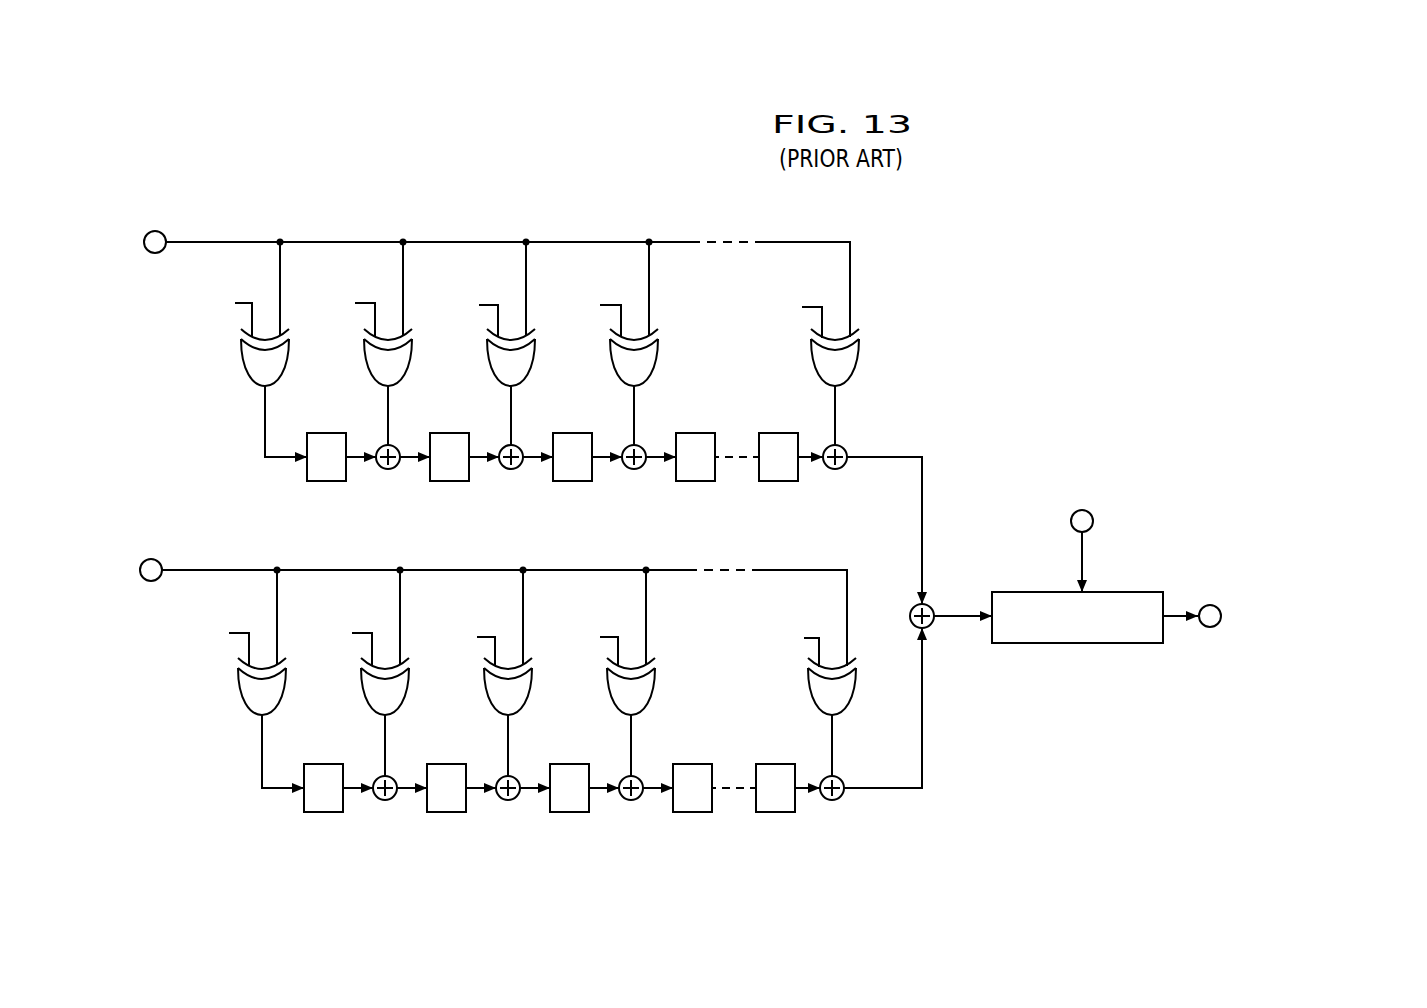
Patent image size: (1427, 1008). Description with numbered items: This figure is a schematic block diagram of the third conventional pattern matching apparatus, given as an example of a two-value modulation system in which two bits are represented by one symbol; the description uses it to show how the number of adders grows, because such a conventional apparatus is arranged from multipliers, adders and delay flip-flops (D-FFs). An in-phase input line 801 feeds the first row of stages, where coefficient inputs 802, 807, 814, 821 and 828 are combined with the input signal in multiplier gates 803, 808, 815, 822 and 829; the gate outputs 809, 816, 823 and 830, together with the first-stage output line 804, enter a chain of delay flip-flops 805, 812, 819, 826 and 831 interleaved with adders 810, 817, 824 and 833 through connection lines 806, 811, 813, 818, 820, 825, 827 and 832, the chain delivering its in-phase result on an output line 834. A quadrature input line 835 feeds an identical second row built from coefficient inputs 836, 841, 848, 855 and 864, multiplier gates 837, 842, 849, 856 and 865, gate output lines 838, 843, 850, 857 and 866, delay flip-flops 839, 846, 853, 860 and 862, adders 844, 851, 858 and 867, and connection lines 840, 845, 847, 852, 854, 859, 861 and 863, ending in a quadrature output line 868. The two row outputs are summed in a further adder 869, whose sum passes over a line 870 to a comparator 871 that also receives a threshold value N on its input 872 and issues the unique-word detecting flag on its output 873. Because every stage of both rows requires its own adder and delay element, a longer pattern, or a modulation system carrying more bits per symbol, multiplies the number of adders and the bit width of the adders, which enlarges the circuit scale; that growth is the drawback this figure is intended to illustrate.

The in-phase input line xi(iT) 801 is at (207, 238).
The coefficient input line ai0 802 is at (242, 324).
The exclusive-OR gate 803 is at (241, 360).
The connection line 804 is at (276, 464).
The delay flip-flop 805 is at (321, 483).
The connection line 806 is at (353, 464).
The coefficient input line ai1 807 is at (365, 324).
The exclusive-OR gate 808 is at (364, 360).
The gate output line 809 is at (388, 404).
The adder 810 is at (388, 470).
The connection line 811 is at (413, 464).
The delay flip-flop 812 is at (445, 483).
The connection line 813 is at (485, 464).
The coefficient input line ai2 814 is at (487, 326).
The exclusive-OR gate 815 is at (486, 362).
The gate output line 816 is at (511, 404).
The adder 817 is at (511, 470).
The connection line 818 is at (537, 464).
The delay flip-flop 819 is at (568, 483).
The connection line 820 is at (607, 464).
The coefficient input line ai3 821 is at (610, 326).
The exclusive-OR gate 822 is at (610, 362).
The gate output line 823 is at (634, 404).
The adder 824 is at (634, 470).
The connection line 825 is at (660, 464).
The delay flip-flop 826 is at (690, 483).
The connection line 827 is at (720, 464).
The coefficient input line aiM-1 828 is at (811, 328).
The exclusive-OR gate 829 is at (811, 365).
The gate output line 830 is at (835, 405).
The delay flip-flop 831 is at (777, 483).
The connection line 832 is at (815, 464).
The adder 833 is at (837, 470).
The in-phase output line yi(iT) 834 is at (888, 464).
The quadrature input line xq(iT) 835 is at (205, 567).
The coefficient input line aq0 836 is at (236, 653).
The exclusive-OR gate 837 is at (235, 690).
The connection line 838 is at (273, 795).
The delay flip-flop 839 is at (318, 814).
The connection line 840 is at (350, 795).
The coefficient input line aq1 841 is at (360, 653).
The exclusive-OR gate 842 is at (359, 690).
The gate output line 843 is at (385, 734).
The adder 844 is at (385, 801).
The connection line 845 is at (410, 795).
The delay flip-flop 846 is at (442, 814).
The connection line 847 is at (482, 795).
The coefficient input line aq2 848 is at (484, 658).
The exclusive-OR gate 849 is at (484, 695).
The gate output line 850 is at (508, 737).
The adder 851 is at (508, 801).
The connection line 852 is at (534, 795).
The delay flip-flop 853 is at (565, 814).
The connection line 854 is at (604, 795).
The coefficient input line aq3 855 is at (607, 658).
The exclusive-OR gate 856 is at (607, 695).
The gate output line 857 is at (631, 737).
The adder 858 is at (630, 801).
The connection line 859 is at (657, 795).
The delay flip-flop 860 is at (687, 814).
The connection line 861 is at (717, 795).
The delay flip-flop 862 is at (774, 814).
The connection line 863 is at (812, 795).
The coefficient input line aqM-1 864 is at (808, 661).
The exclusive-OR gate 865 is at (808, 699).
The gate output line 866 is at (832, 740).
The adder 867 is at (834, 801).
The quadrature output line yq(iT) 868 is at (885, 795).
The adder 869 is at (909, 626).
The connection line 870 is at (966, 620).
The comparator 871 is at (1062, 644).
The threshold N input line 872 is at (1083, 548).
The UW detecting flag output line 873 is at (1172, 620).